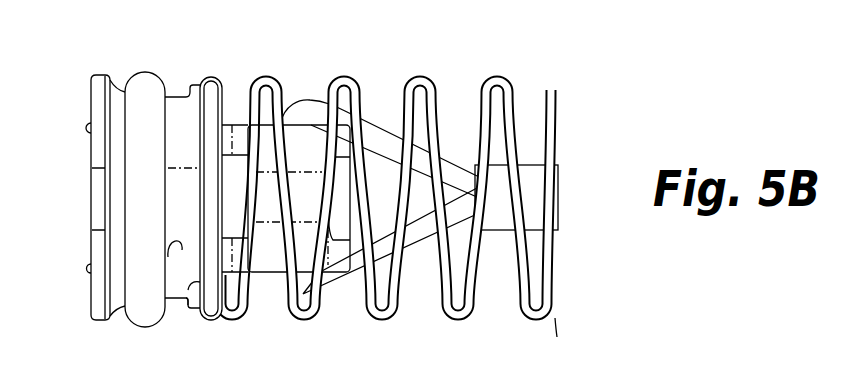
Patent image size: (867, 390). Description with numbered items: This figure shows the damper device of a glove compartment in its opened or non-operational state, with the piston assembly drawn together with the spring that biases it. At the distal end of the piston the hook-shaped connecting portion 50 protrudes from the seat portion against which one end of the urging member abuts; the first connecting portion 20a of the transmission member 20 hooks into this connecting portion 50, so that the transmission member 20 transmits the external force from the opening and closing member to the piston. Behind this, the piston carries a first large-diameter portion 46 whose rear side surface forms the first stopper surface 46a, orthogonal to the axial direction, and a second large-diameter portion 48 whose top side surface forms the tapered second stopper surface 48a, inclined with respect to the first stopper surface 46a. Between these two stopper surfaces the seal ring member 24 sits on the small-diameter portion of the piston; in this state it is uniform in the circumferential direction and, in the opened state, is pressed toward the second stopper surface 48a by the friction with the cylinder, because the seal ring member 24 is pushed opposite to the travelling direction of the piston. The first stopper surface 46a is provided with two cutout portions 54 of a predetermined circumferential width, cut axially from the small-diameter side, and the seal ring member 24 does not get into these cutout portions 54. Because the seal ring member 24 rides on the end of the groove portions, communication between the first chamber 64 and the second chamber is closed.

The transmission member 20 is at (532, 177).
The first connecting portion 20a is at (377, 133).
The seal ring member 24 is at (140, 303).
The first large-diameter portion 46 is at (182, 107).
The first stopper surface 46a is at (170, 257).
The second large-diameter portion 48 is at (97, 77).
The second stopper surface 48a is at (118, 82).
The connecting portion 50 is at (300, 143).
The cutout portions 54 is at (177, 305).
The first chamber 64 is at (617, 378).